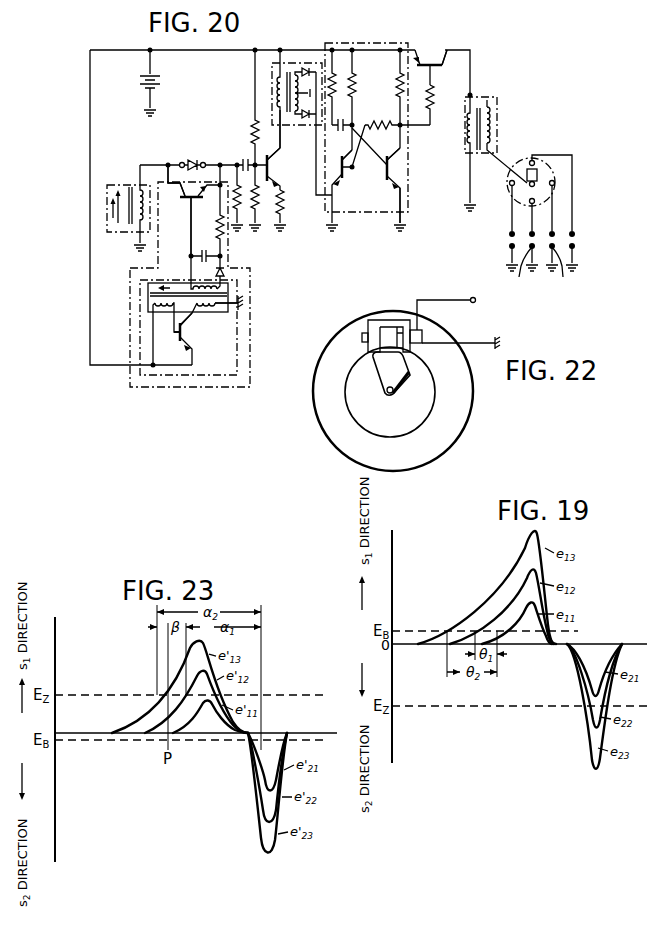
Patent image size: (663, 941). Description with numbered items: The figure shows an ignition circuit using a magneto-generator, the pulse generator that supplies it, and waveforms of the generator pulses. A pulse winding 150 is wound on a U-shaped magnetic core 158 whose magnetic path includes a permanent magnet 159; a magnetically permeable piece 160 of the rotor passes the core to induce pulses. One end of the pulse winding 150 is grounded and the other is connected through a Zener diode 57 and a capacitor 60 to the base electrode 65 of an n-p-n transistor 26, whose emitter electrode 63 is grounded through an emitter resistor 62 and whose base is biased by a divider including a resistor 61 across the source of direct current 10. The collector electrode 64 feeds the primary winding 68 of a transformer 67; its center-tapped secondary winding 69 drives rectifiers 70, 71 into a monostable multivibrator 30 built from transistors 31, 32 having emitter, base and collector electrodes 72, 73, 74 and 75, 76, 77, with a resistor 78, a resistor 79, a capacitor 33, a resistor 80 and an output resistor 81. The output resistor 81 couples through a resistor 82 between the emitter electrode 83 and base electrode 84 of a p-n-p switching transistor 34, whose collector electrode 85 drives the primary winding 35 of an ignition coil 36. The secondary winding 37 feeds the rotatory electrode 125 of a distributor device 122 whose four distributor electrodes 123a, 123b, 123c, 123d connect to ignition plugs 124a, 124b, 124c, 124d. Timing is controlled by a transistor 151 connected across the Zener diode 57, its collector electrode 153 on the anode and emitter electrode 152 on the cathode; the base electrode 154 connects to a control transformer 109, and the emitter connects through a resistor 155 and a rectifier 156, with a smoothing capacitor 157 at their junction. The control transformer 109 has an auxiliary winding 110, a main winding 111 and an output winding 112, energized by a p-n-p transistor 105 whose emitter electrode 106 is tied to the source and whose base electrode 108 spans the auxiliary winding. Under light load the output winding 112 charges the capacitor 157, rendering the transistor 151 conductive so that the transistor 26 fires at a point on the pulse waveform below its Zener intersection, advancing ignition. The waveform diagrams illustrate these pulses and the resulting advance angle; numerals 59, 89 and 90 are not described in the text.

In FIG. 20, the source of direct current 10 is at (161, 83).
In FIG. 20, the transistor 26 is at (280, 150).
In FIG. 20, the monostable multivibrator 30 is at (378, 212).
In FIG. 20, the transistor 31 is at (338, 190).
In FIG. 20, the transistor 32 is at (398, 189).
In FIG. 20, the capacitor 33 is at (342, 116).
In FIG. 20, the switching transistor 34 is at (431, 47).
In FIG. 20, the primary winding 35 is at (469, 130).
In FIG. 20, the ignition coil 36 is at (497, 104).
In FIG. 20, the secondary winding 37 is at (490, 125).
In FIG. 20, the Zener diode 57 is at (193, 155).
In FIG. 20, the resistor 59 is at (245, 198).
In FIG. 20, the capacitor 60 is at (249, 155).
In FIG. 20, the resistor 61 is at (264, 198).
In FIG. 20, the emitter resistor 62 is at (285, 206).
In FIG. 20, the emitter electrode 63 is at (283, 179).
In FIG. 20, the collector electrode 64 is at (283, 151).
In FIG. 20, the base electrode 65 is at (266, 107).
In FIG. 20, the transformer 67 is at (287, 124).
In FIG. 20, the primary winding 68 is at (277, 89).
In FIG. 20, the secondary winding 69 is at (296, 72).
In FIG. 20, the rectifier 70 is at (315, 64).
In FIG. 20, the rectifier 71 is at (306, 119).
In FIG. 20, the emitter electrode 72 is at (344, 187).
In FIG. 20, the base electrode 73 is at (364, 167).
In FIG. 20, the collector electrode 74 is at (344, 146).
In FIG. 20, the emitter electrode 75 is at (391, 203).
In FIG. 20, the base electrode 76 is at (383, 179).
In FIG. 20, the collector electrode 77 is at (389, 147).
In FIG. 20, the resistor 78 is at (376, 135).
In FIG. 20, the resistor 79 is at (342, 87).
In FIG. 20, the resistor 80 is at (363, 100).
In FIG. 20, the output resistor 81 is at (392, 99).
In FIG. 20, the resistor 82 is at (441, 105).
In FIG. 20, the emitter electrode 83 is at (418, 70).
In FIG. 20, the base electrode 84 is at (442, 74).
In FIG. 20, the collector electrode 85 is at (454, 60).
In FIG. 22, the cam 89 is at (412, 362).
In FIG. 22, the pivot 90 is at (377, 357).
In FIG. 20, the transistor 105 is at (198, 339).
In FIG. 20, the emitter electrode 106 is at (190, 348).
In FIG. 20, the base electrode 108 is at (179, 339).
In FIG. 20, the control transformer 109 is at (213, 309).
In FIG. 20, the auxiliary winding 110 is at (153, 306).
In FIG. 20, the main winding 111 is at (224, 306).
In FIG. 20, the output winding 112 is at (201, 286).
In FIG. 20, the distributor device 122 is at (532, 167).
In FIG. 20, the distributor electrode 123a is at (529, 160).
In FIG. 20, the distributor electrode 123b is at (555, 185).
In FIG. 20, the distributor electrode 123c is at (535, 203).
In FIG. 20, the distributor electrode 123d is at (511, 187).
In FIG. 20, the ignition plug 124a is at (575, 240).
In FIG. 20, the ignition plug 124b is at (571, 262).
In FIG. 20, the ignition plug 124c is at (530, 262).
In FIG. 20, the ignition plug 124d is at (509, 240).
In FIG. 20, the rotatory electrode 125 is at (538, 175).
In FIG. 20, the pulse winding 150 is at (140, 186).
In FIG. 22, the pulse winding 150 is at (423, 333).
In FIG. 20, the transistor 151 is at (195, 210).
In FIG. 20, the emitter electrode 152 is at (204, 191).
In FIG. 20, the collector electrode 153 is at (181, 192).
In FIG. 20, the base electrode 154 is at (186, 201).
In FIG. 20, the resistor 155 is at (209, 210).
In FIG. 20, the rectifier 156 is at (236, 272).
In FIG. 20, the smoothing capacitor 157 is at (208, 247).
In FIG. 22, the magnetic core 158 is at (383, 326).
In FIG. 22, the permanent magnet 159 is at (362, 337).
In FIG. 22, the magnetically permeable piece 160 is at (402, 386).